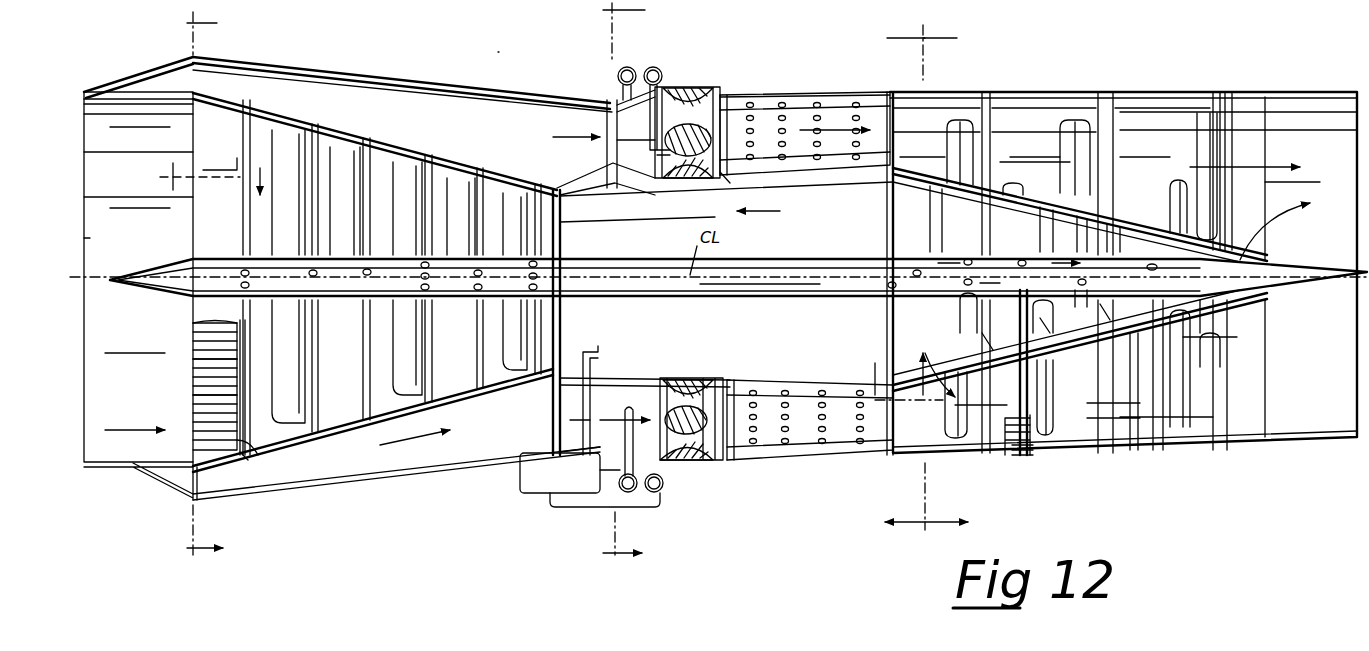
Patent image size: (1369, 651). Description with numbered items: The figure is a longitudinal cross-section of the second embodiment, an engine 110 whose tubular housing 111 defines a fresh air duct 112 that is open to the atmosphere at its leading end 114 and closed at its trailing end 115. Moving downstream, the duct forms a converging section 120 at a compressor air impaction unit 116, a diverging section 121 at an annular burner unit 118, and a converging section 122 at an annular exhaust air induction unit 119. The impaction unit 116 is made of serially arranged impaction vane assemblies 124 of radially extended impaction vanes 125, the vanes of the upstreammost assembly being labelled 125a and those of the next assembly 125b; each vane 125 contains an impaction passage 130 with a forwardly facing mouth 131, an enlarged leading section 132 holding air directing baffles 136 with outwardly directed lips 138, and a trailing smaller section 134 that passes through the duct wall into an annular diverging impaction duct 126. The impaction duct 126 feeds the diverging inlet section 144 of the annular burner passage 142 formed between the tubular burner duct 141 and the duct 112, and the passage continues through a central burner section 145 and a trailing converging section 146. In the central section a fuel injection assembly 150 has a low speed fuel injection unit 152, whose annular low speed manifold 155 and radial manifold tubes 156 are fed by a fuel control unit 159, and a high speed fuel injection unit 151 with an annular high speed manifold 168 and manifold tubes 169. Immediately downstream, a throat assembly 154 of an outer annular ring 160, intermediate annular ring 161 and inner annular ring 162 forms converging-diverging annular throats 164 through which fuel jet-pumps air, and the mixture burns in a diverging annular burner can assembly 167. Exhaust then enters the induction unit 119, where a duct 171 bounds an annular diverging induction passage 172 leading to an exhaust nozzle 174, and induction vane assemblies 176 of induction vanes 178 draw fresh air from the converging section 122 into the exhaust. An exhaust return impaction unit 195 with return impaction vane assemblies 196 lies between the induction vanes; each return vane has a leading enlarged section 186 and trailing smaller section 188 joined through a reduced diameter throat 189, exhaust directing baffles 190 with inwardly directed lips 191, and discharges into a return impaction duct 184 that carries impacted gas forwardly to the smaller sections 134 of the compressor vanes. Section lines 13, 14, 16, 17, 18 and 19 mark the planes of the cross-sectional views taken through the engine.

The engine 110 is at (543, 17).
The tubular housing 111 is at (405, 78).
The fresh air duct 112 is at (150, 115).
The leading end 114 is at (138, 284).
The trailing end 115 is at (1318, 255).
The compressor air impaction unit 116 is at (527, 122).
The annular burner unit 118 is at (805, 95).
The annular exhaust air induction unit 119 is at (1030, 92).
The converging section 120 is at (350, 138).
The diverging section 121 is at (745, 178).
The converging section 122 is at (1148, 225).
The impaction vane assembly 124 is at (268, 130).
The impaction vane 125 is at (258, 95).
The impaction vanes of upstreammost vane assembly 125a is at (84, 238).
The impaction vanes of next upstreammost vane assembly 125b is at (300, 417).
The annular diverging impaction duct 126 is at (472, 96).
The impaction passage 130 is at (200, 341).
The open mouth 131 is at (195, 322).
The leading section 132 is at (205, 361).
The trailing smaller section 134 is at (255, 450).
The air directing baffles 136 is at (200, 400).
The outwardly directed lip 138 is at (245, 458).
The tubular burner duct 141 is at (800, 463).
The annular burner passage 142 is at (726, 95).
The diverging inlet section 144 is at (608, 100).
The central burner section 145 is at (748, 445).
The trailing converging section 146 is at (830, 97).
The fuel injection assembly 150 is at (660, 68).
The high speed fuel injection unit 151 is at (635, 400).
The low speed fuel injection unit 152 is at (708, 73).
The throat assembly 154 is at (680, 176).
The annular low speed manifold 155 is at (663, 488).
The manifold tubes 156 is at (612, 151).
The fuel control unit 159 is at (520, 487).
The outer annular ring 160 is at (718, 92).
The intermediate annular ring 161 is at (718, 180).
The inner annular ring 162 is at (688, 378).
The converging-diverging annular throats 164 is at (714, 380).
The diverging annular burner can assembly 167 is at (860, 187).
The annular high speed manifold 168 is at (615, 72).
The manifold tubes 169 is at (612, 400).
The duct 171 is at (1175, 92).
The annular diverging induction passage 172 is at (1160, 112).
The exhaust nozzle 174 is at (1325, 100).
The induction vane assemblies 176 is at (980, 115).
The induction vanes 178 is at (893, 150).
The return impaction duct 184 is at (693, 300).
The leading enlarged section 186 is at (1013, 460).
The trailing smaller section 188 is at (1022, 452).
The reduced diameter throat 189 is at (1016, 455).
The exhaust directing baffles 190 is at (1012, 437).
The inwardly directed lip 191 is at (1028, 437).
The exhaust return impaction unit 195 is at (1085, 115).
The return impaction vane assemblies 196 is at (975, 130).
The section line 13— 13 is at (216, 289).
The section line 14— 14 is at (635, 283).
The section line 16— 16 is at (955, 272).
The section line 17— 17 is at (890, 281).
The section line 18— 18 is at (217, 180).
The section line 19— 19 is at (906, 365).